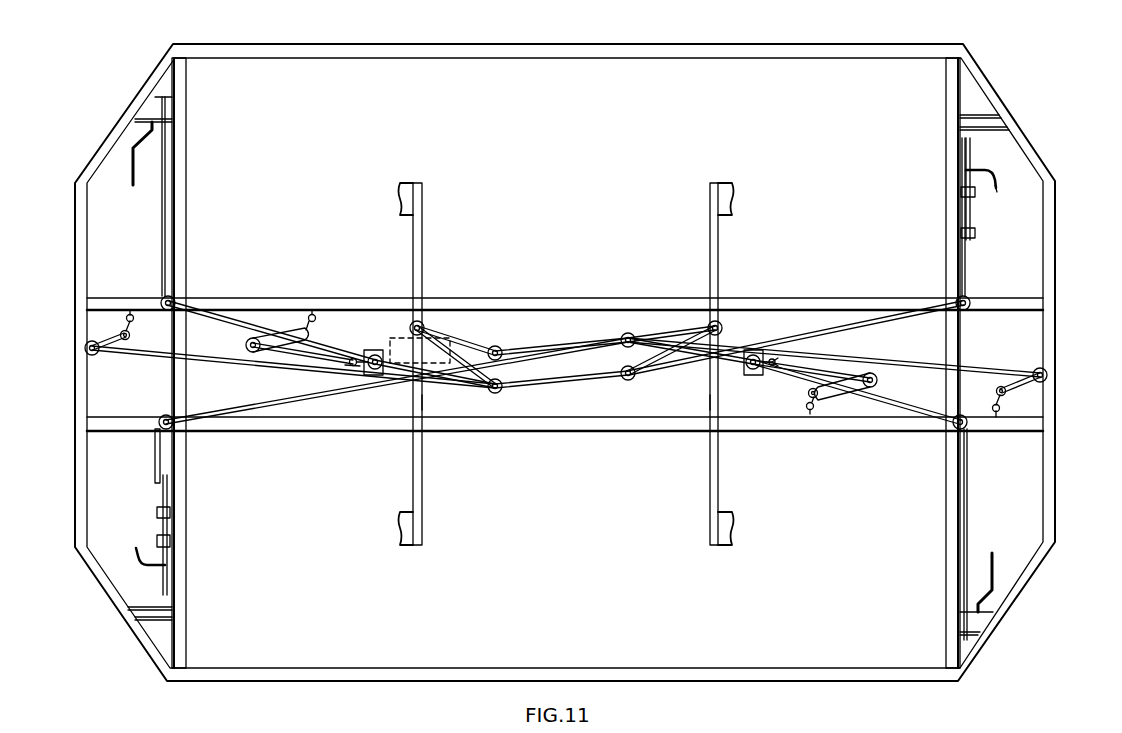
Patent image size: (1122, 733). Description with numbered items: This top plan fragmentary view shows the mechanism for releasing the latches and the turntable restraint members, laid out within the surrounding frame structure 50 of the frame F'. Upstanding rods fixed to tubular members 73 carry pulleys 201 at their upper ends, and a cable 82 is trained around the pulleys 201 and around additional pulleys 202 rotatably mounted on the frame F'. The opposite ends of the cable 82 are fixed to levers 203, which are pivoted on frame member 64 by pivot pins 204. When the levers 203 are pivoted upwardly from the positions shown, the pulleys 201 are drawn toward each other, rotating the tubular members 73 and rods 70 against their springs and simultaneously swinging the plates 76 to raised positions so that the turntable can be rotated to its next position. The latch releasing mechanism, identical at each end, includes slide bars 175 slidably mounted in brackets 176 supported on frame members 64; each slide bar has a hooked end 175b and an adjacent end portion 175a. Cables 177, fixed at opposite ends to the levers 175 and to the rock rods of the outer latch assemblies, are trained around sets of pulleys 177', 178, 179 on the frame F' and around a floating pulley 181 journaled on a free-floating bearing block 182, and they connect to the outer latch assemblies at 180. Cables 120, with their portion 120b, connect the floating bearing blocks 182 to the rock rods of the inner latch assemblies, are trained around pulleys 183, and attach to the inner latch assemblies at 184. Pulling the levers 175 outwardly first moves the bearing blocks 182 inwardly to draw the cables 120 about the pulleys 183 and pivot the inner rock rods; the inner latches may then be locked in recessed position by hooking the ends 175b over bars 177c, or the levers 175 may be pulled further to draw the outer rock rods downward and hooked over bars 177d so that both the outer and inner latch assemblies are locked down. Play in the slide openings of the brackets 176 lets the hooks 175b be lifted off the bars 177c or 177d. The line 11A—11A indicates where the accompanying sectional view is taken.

The frame housing 50 is at (1050, 290).
The frame member 64 is at (186, 133).
The rod 70 is at (422, 268).
The tubular member 73 is at (424, 402).
The plate 76 is at (733, 198).
The cable 82 is at (553, 318).
The cable 120 is at (298, 333).
The link arm portion 120b is at (346, 368).
The slide bar 175 is at (971, 170).
The hook end 175a is at (995, 190).
The hooked end 175b is at (966, 145).
The bracket 176 is at (961, 232).
The cable 177 is at (538, 368).
The pulley 177' is at (559, 279).
The bar 177c is at (990, 128).
The bar 177d is at (985, 112).
The pulley 178 is at (632, 334).
The pulley 179 is at (85, 350).
The cable connection to outer latch assembly 180 is at (130, 314).
The floating pulley 181 is at (372, 372).
The free-floating bearing block 182 is at (352, 357).
The pulley 183 is at (247, 345).
The cable connection to inner latch assembly 184 is at (316, 318).
The pulley 201 is at (420, 322).
The additional pulley 202 is at (620, 372).
The lever 203 is at (130, 165).
The pivot pin 204 is at (172, 97).
The section line 11A— 11A is at (453, 348).
The frame F' is at (1084, 447).